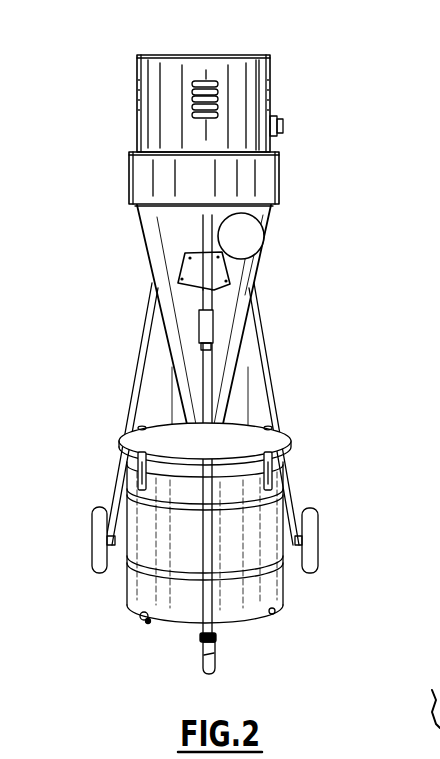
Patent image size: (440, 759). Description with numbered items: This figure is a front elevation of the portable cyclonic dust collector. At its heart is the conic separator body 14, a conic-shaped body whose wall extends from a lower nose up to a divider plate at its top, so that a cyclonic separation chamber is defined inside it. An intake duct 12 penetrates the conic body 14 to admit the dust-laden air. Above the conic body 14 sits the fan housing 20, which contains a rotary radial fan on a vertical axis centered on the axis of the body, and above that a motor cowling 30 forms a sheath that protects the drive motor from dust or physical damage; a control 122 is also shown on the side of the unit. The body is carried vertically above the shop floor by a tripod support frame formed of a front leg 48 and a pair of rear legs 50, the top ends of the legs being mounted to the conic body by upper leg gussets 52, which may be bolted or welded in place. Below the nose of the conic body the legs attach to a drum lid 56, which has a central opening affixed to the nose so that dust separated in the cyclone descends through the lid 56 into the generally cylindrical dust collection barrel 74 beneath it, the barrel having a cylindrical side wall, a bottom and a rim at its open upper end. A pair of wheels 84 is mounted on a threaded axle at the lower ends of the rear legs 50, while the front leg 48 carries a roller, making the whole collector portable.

The motor cowling 30 is at (283, 62).
The switch 122 is at (283, 125).
The fan housing 20 is at (279, 167).
The intake duct 12 is at (265, 237).
The conic separator body 14 is at (249, 278).
The upper leg gussets 52 is at (184, 260).
The rear legs 50 is at (136, 391).
The drum lid 56 is at (284, 433).
The front leg 48 is at (209, 527).
The wheels 84 is at (92, 543).
The dust collection barrel 74 is at (150, 558).